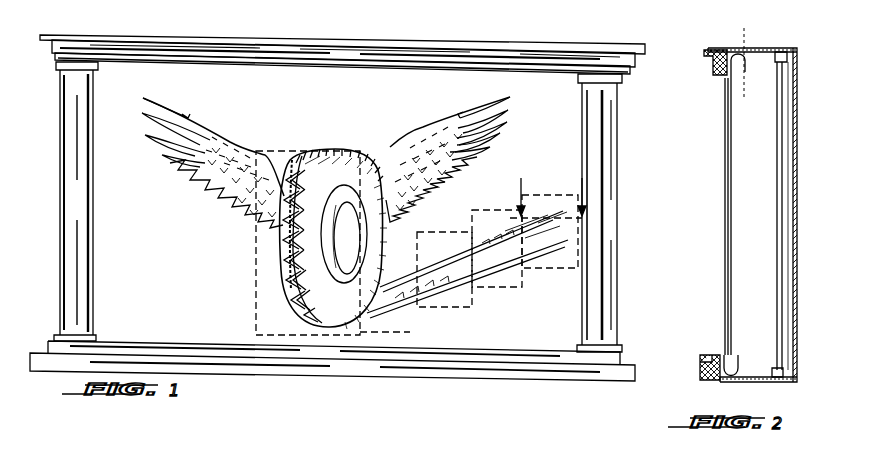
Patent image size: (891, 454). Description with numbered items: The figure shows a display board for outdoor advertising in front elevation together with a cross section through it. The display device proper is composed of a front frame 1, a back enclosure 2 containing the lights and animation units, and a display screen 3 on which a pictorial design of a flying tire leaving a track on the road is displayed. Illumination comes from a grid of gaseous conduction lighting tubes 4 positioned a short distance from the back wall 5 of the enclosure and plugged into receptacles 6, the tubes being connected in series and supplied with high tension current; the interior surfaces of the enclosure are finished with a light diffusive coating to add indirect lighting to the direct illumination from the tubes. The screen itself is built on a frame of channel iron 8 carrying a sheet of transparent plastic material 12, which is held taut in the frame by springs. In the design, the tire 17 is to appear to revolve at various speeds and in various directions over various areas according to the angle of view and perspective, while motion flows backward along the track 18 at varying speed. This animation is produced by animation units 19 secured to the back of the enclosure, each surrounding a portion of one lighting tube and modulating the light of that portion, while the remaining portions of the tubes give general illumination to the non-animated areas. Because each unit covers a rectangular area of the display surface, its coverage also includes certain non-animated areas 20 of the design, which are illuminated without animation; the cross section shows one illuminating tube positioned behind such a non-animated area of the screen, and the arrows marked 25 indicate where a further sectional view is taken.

In FIG. 1, the front frame 1 is at (605, 137).
In FIG. 2, the front frame 1 is at (710, 66).
In FIG. 1, the back enclosure 2 is at (224, 17).
In FIG. 2, the back enclosure 2 is at (792, 170).
In FIG. 1, the display screen 3 is at (554, 135).
In FIG. 2, the display screen 3 is at (725, 198).
In FIG. 1, the gaseous conduction lighting tubes 4 is at (388, 22).
In FIG. 2, the gaseous conduction lighting tubes 4 is at (778, 200).
In FIG. 2, the back wall 5 is at (790, 240).
In FIG. 2, the receptacles 6 is at (787, 58).
In FIG. 2, the channel iron frame 8 is at (743, 70).
In FIG. 1, the sheet of transparent plastic material 12 is at (529, 175).
In FIG. 1, the tire 17 is at (286, 248).
In FIG. 1, the track 18 is at (458, 273).
In FIG. 1, the animation units 19 is at (385, 150).
In FIG. 1, the non-animated areas 20 is at (279, 168).
In FIG. 1, the arrow indicator 25 is at (553, 196).